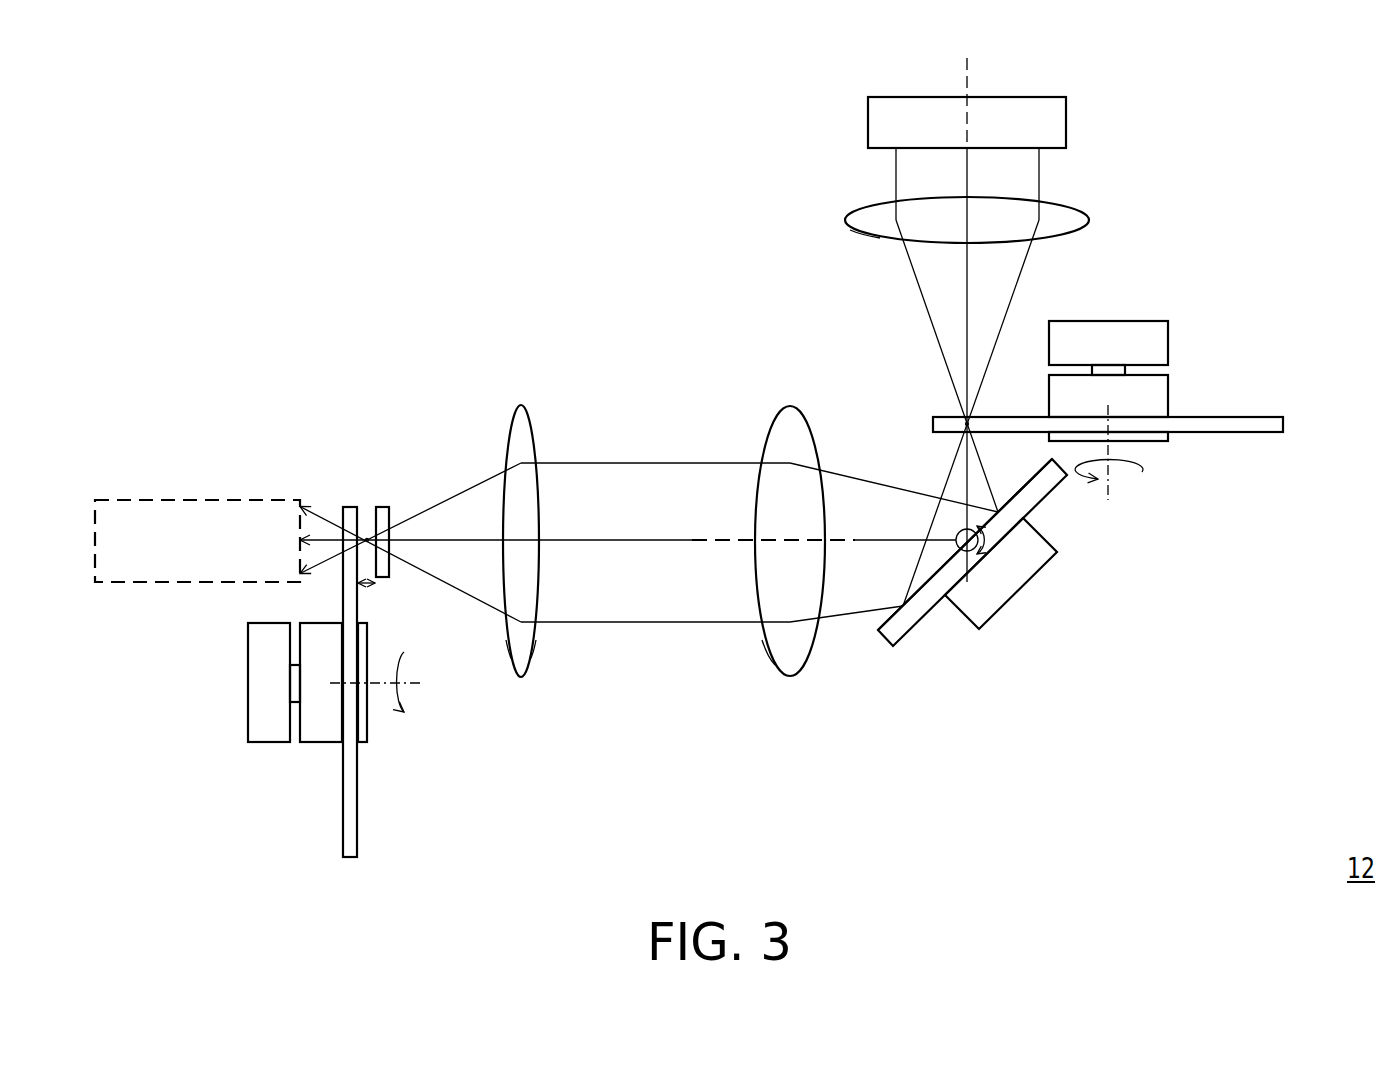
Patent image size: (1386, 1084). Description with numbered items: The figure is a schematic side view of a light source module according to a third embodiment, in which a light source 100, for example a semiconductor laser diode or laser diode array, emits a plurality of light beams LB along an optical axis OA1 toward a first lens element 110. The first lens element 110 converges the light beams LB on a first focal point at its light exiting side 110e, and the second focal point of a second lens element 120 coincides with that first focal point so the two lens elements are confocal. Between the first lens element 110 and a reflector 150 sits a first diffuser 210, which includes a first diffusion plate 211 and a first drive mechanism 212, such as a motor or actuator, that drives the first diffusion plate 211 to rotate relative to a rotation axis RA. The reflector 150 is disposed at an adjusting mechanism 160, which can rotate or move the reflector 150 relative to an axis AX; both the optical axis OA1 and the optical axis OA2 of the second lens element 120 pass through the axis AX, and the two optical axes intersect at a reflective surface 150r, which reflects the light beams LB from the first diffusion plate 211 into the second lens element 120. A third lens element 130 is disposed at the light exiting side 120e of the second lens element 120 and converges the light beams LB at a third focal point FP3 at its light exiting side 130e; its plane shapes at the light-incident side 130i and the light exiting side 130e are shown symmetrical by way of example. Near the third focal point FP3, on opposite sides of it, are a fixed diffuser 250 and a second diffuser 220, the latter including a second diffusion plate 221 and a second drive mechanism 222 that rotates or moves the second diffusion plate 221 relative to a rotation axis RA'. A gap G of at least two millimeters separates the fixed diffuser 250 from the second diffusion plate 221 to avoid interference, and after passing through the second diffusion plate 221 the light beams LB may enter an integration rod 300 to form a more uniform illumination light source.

The light source 100 is at (1057, 125).
The first lens element 110 is at (1067, 217).
The light exiting side of the first lens element 110e is at (866, 233).
The light beams LB is at (967, 167).
The optical axis of the first lens element OA1 is at (968, 66).
The first diffusion plate 211 is at (1275, 423).
The first drive mechanism 212 is at (1138, 330).
The first diffuser 210 is at (1205, 336).
The rotation axis of the first diffuser RA is at (1131, 463).
The second lens element 120 is at (787, 422).
The light exiting side of the second lens element 120e is at (768, 655).
The optical axis of the second lens element OA2 is at (722, 539).
The third lens element 130 is at (518, 422).
The light exiting side of the third lens element 130e is at (506, 657).
The light-incident side of the third lens element 130i is at (534, 657).
The reflector 150 is at (898, 641).
The reflective surface 150r is at (923, 606).
The adjusting mechanism 160 is at (1051, 558).
The axis AX is at (968, 584).
The integration rod 300 is at (208, 500).
The third focal point FP3 is at (365, 532).
The fixed diffuser 250 is at (386, 517).
The gap G is at (366, 601).
The second diffusion plate 221 is at (350, 852).
The second drive mechanism 222 is at (255, 712).
The second diffuser 220 is at (298, 776).
The rotation axis of the second diffuser RA' is at (390, 662).